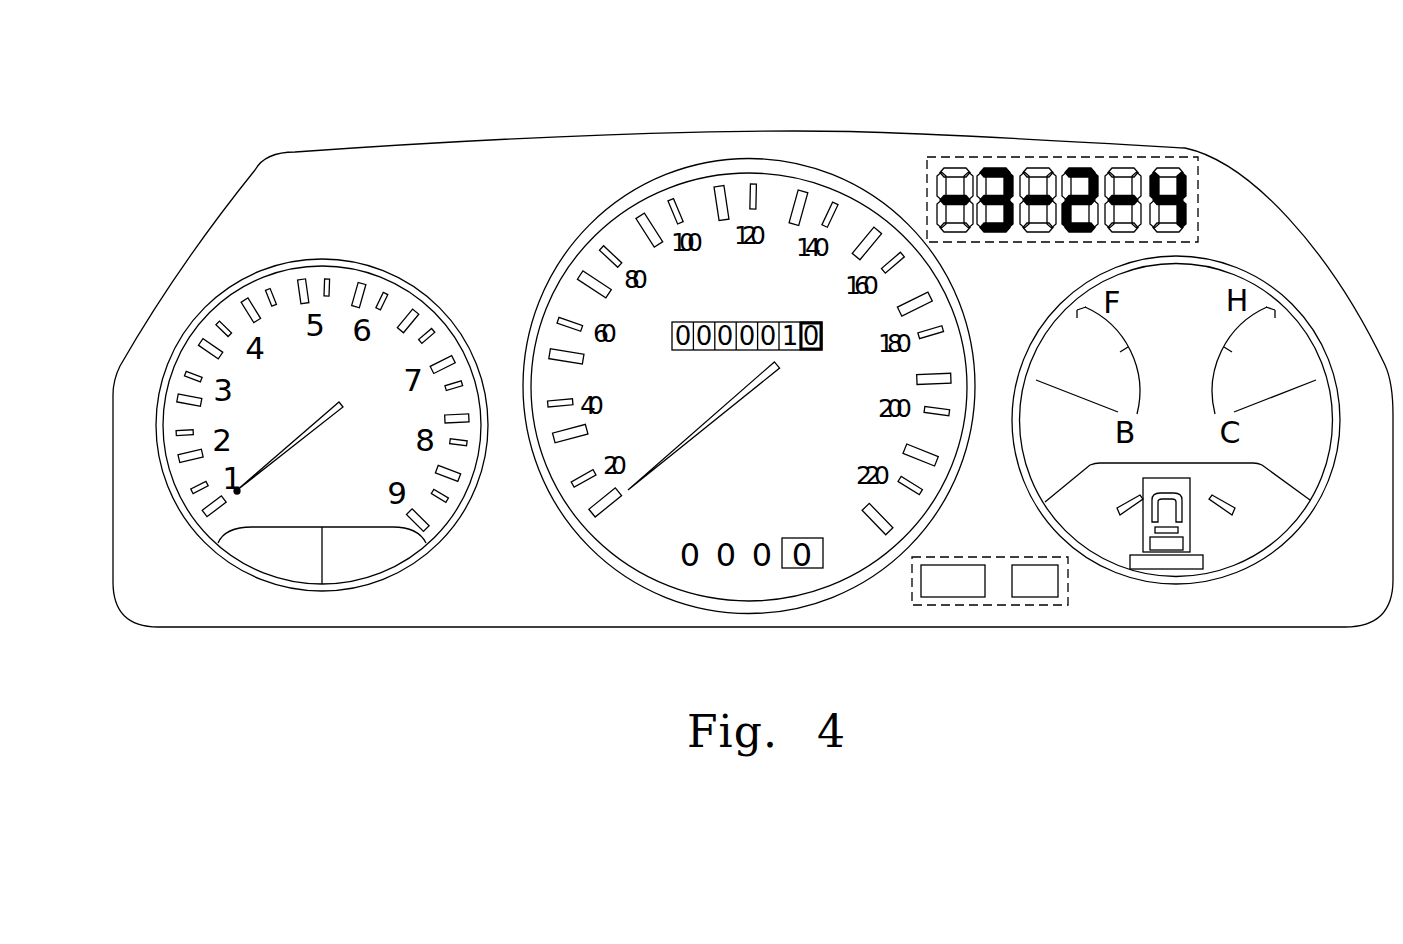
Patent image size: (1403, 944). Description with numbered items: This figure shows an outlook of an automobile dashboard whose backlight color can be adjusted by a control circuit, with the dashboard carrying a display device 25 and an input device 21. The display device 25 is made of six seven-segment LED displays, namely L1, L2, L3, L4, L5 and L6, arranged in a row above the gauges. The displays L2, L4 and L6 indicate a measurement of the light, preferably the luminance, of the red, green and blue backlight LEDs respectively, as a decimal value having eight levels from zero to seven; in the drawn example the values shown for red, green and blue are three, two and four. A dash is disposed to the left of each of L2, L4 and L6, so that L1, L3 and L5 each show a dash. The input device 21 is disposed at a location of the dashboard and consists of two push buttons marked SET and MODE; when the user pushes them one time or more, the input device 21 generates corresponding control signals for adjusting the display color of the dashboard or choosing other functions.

The seven-segment LED display L1 is at (935, 178).
The seven-segment LED display L2 is at (988, 168).
The seven-segment LED display L3 is at (1038, 168).
The seven-segment LED display L4 is at (1080, 165).
The seven-segment LED display L5 is at (1122, 165).
The seven-segment LED display L6 is at (1168, 165).
The display device 25 is at (1199, 198).
The input device 21 is at (998, 606).